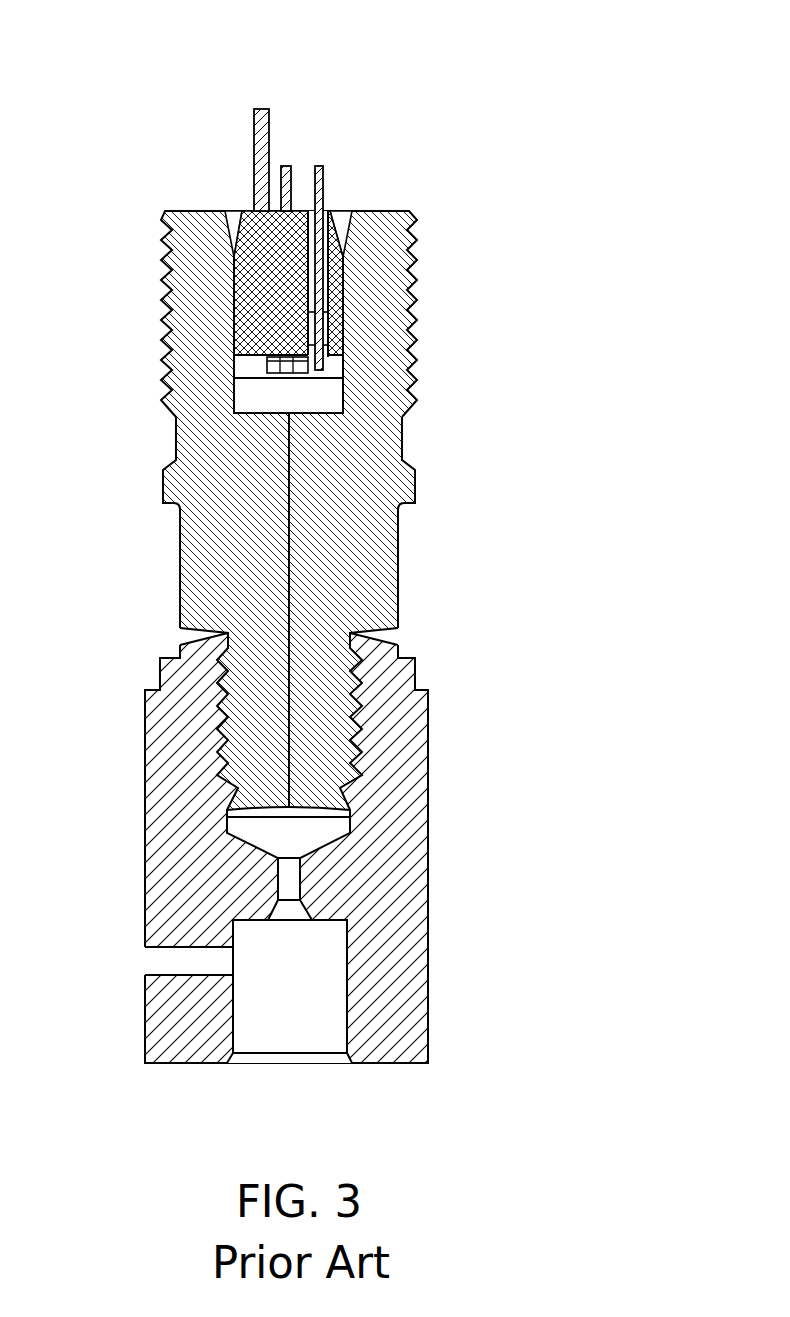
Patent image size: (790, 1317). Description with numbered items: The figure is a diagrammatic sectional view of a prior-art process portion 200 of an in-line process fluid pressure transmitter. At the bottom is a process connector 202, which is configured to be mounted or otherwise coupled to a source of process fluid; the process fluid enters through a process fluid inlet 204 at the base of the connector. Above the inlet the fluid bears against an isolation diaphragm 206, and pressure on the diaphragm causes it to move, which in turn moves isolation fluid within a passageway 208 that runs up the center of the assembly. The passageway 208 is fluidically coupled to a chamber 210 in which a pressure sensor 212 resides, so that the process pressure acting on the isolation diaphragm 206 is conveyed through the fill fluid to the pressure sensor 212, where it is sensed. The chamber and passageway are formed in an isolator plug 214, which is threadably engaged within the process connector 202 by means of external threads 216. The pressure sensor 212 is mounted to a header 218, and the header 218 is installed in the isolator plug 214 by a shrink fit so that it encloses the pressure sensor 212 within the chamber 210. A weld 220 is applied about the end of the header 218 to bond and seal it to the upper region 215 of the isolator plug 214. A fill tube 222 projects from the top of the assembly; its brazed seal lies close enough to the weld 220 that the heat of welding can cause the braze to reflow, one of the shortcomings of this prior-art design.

The process portion 200 is at (586, 56).
The process connector 202 is at (428, 951).
The process fluid inlet 204 is at (310, 1063).
The isolation diaphragm 206 is at (303, 817).
The passageway 208 is at (289, 500).
The chamber 210 is at (338, 385).
The pressure sensor 212 is at (266, 366).
The isolator plug 214 is at (398, 550).
The upper region 215 is at (380, 211).
The external threads 216 is at (217, 752).
The header 218 is at (233, 285).
The weld 220 is at (340, 211).
The fill tube 222 is at (270, 125).